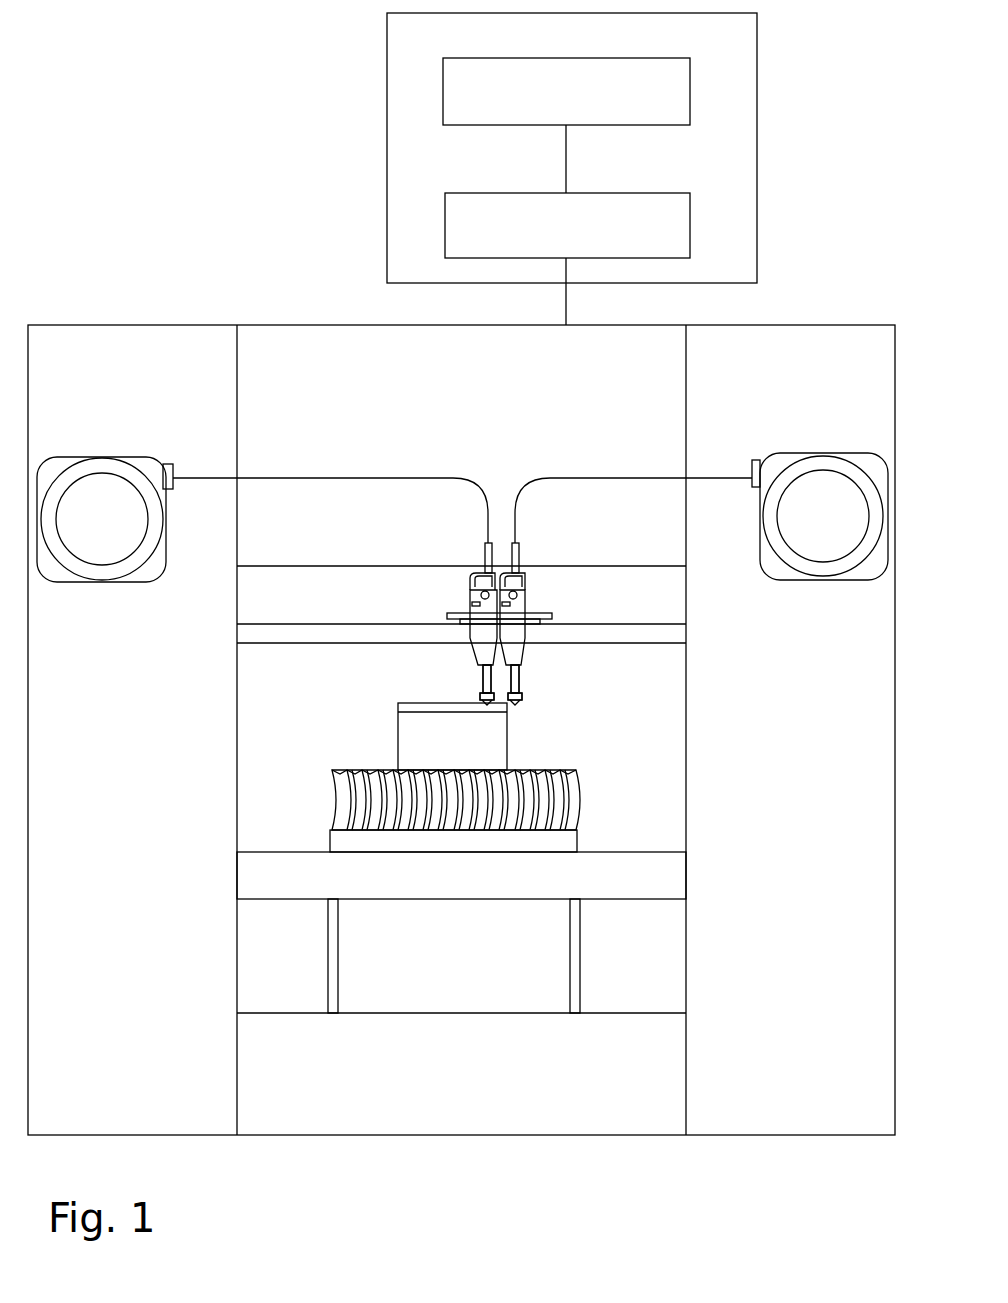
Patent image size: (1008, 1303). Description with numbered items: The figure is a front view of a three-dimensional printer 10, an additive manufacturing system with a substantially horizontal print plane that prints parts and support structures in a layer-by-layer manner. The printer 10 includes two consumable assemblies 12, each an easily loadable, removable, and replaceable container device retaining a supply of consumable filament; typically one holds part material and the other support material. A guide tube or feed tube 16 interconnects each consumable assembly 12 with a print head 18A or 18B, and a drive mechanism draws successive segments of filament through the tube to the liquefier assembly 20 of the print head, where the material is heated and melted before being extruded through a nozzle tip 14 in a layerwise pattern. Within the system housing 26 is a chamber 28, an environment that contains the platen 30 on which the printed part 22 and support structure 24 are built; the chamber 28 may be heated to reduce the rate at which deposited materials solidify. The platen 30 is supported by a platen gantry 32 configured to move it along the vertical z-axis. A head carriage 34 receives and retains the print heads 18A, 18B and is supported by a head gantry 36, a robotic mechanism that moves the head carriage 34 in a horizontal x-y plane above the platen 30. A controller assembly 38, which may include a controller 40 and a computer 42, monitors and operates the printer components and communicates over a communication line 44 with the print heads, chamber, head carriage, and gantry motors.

The 3D printer 10 is at (156, 92).
The consumable assembly 12 is at (90, 457).
The nozzle tip 14 is at (488, 705).
The guide tube or feed tube 16 is at (253, 478).
The print head 18A is at (466, 605).
The print head 18B is at (532, 605).
The liquefier assembly 20 is at (484, 687).
The 3D part 22 is at (407, 752).
The support structure 24 is at (568, 835).
The system housing 26 is at (237, 752).
The chamber 28 is at (250, 795).
The platen 30 is at (678, 888).
The platen gantry 32 is at (587, 995).
The head carriage 34 is at (447, 616).
The head gantry 36 is at (317, 624).
The controller assembly 38 is at (637, 148).
The controller 40 is at (689, 212).
The computer 42 is at (689, 72).
The communication line 44 is at (566, 297).